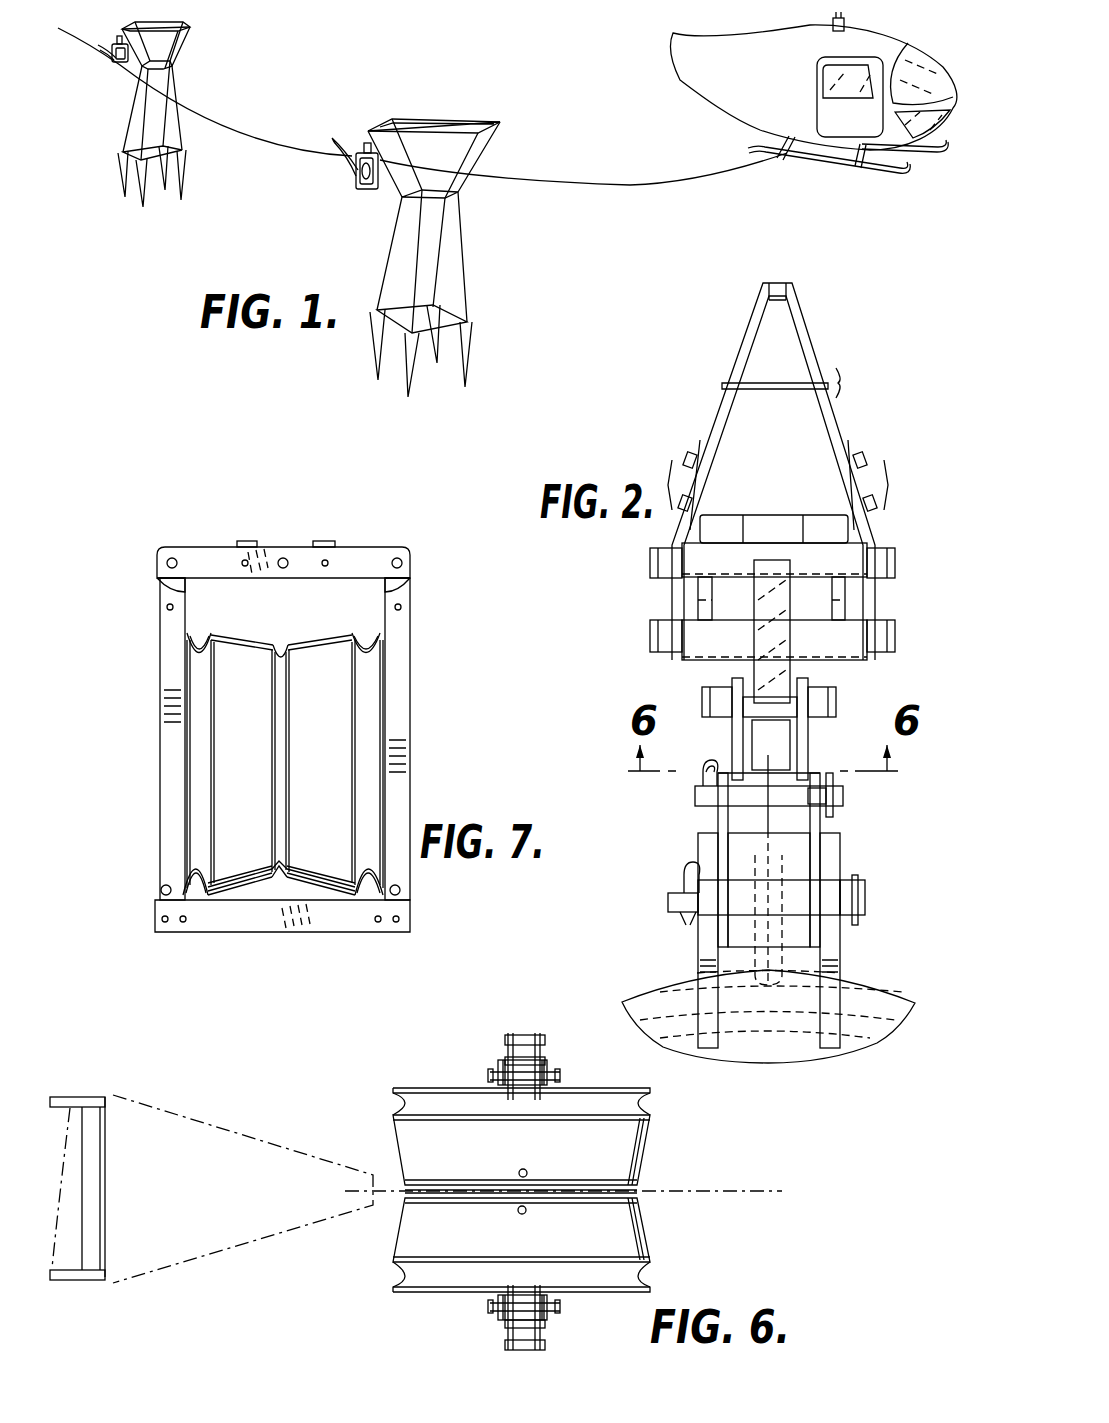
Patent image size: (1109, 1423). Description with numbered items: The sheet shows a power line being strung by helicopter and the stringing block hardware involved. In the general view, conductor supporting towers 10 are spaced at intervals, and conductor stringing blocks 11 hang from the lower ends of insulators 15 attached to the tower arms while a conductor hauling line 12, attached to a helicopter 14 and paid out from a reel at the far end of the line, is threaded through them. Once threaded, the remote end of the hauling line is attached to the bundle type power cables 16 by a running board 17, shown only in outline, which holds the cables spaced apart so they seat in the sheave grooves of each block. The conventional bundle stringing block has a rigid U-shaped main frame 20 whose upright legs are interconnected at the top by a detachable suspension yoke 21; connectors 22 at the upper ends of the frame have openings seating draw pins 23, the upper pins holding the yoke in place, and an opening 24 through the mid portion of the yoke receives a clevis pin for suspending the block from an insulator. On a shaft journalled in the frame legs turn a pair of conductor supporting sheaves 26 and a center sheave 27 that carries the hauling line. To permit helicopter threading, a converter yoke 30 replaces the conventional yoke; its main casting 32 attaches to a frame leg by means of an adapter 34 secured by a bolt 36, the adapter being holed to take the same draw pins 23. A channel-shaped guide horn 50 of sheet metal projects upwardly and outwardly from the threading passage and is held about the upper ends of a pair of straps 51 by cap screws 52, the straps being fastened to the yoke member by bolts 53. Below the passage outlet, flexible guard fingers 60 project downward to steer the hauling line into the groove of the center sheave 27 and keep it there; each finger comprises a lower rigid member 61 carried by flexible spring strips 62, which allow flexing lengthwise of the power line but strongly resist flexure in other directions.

In FIG. 1, the conductor supporting tower 10 is at (185, 78).
In FIG. 1, the conductor stringing block 11 is at (112, 66).
In FIG. 1, the conductor hauling line 12 is at (577, 180).
In FIG. 6, the conductor hauling line 12 is at (739, 1190).
In FIG. 1, the helicopter 14 is at (724, 113).
In FIG. 1, the insulator 15 is at (118, 44).
In FIG. 6, the bundle type power cable 16 is at (77, 1188).
In FIG. 6, the running board 17 is at (230, 1118).
In FIG. 2, the main frame 20 is at (840, 975).
In FIG. 7, the main frame 20 is at (172, 684).
In FIG. 6, the main frame 20 is at (500, 1066).
In FIG. 7, the suspension yoke 21 is at (350, 556).
In FIG. 2, the connector 22 is at (822, 828).
In FIG. 7, the connector 22 is at (167, 570).
In FIG. 6, the connector 22 is at (535, 1033).
In FIG. 2, the draw pin 23 is at (840, 796).
In FIG. 7, the draw pin 23 is at (174, 558).
In FIG. 6, the draw pin 23 is at (557, 1078).
In FIG. 7, the opening 24 is at (287, 559).
In FIG. 2, the conductor supporting sheave 26 is at (885, 1000).
In FIG. 7, the conductor supporting sheave 26 is at (200, 643).
In FIG. 6, the conductor supporting sheave 26 is at (637, 1103).
In FIG. 7, the center sheave 27 is at (286, 641).
In FIG. 6, the center sheave 27 is at (650, 1168).
In FIG. 2, the converter yoke 30 is at (860, 418).
In FIG. 2, the main casting 32 is at (832, 664).
In FIG. 2, the adapter 34 is at (812, 752).
In FIG. 2, the bolt 36 is at (828, 702).
In FIG. 1, the guide horn 50 is at (345, 160).
In FIG. 2, the guide horn 50 is at (722, 383).
In FIG. 2, the strap 51 is at (676, 590).
In FIG. 2, the cap screw 52 is at (680, 460).
In FIG. 2, the bolt 53 is at (655, 562).
In FIG. 2, the guard finger 60 is at (752, 953).
In FIG. 6, the guard finger 60 is at (526, 1206).
In FIG. 2, the lower rigid member 61 is at (790, 965).
In FIG. 2, the spring strip 62 is at (755, 812).